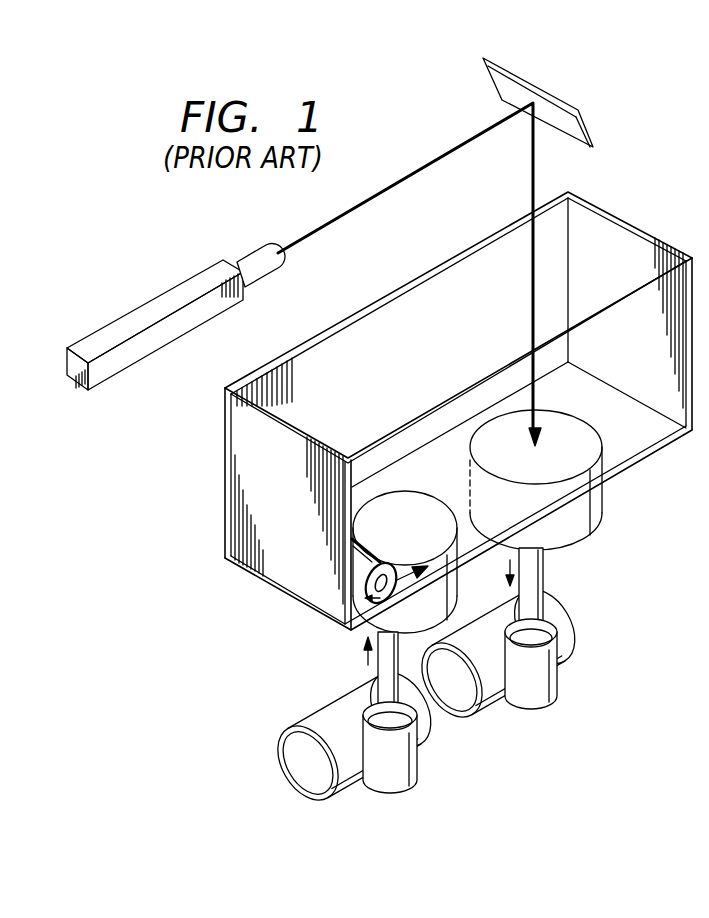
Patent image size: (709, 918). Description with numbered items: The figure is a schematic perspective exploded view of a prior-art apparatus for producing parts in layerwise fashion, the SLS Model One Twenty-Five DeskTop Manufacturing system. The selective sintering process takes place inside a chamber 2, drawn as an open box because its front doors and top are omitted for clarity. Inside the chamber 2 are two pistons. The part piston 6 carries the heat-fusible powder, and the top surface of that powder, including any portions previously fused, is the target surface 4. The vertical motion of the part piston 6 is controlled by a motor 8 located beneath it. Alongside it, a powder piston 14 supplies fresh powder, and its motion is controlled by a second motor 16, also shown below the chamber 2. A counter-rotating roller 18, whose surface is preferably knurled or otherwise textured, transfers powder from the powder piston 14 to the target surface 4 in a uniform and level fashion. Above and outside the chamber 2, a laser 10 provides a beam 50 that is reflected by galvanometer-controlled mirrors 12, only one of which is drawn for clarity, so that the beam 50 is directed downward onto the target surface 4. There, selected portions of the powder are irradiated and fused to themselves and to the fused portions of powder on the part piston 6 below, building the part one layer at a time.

The chamber 2 is at (651, 240).
The target surface 4 is at (566, 420).
The part piston 6 is at (603, 508).
The motor 8 is at (560, 677).
The laser 10 is at (138, 313).
The galvanometer-controlled mirrors 12 is at (591, 133).
The powder piston 14 is at (370, 627).
The motor 16 is at (418, 760).
The counter-rotating roller 18 is at (382, 557).
The beam 50 is at (533, 173).